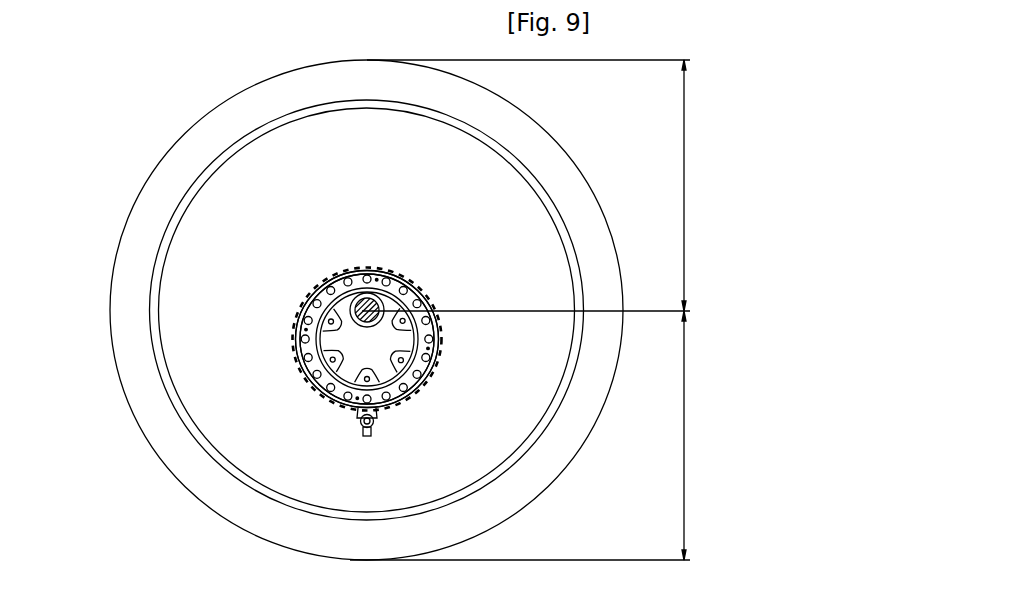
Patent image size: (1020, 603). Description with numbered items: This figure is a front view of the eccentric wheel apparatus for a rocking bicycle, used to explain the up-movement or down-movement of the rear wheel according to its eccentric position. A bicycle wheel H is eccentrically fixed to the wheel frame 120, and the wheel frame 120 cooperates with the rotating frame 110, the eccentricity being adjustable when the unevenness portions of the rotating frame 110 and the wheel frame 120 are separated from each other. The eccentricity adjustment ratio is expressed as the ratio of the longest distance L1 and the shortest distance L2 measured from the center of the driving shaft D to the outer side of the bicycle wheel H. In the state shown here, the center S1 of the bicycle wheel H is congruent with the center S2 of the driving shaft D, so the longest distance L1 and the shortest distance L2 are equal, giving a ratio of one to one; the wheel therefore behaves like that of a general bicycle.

The rotating frame 110 is at (418, 345).
The wheel frame 120 is at (407, 270).
The center of the bicycle wheel S1 is at (322, 291).
The center of the driving shaft S2 is at (367, 339).
The driving shaft D is at (350, 327).
The bicycle wheel H is at (318, 540).
The longest distance L1 is at (530, 435).
The shortest distance L2 is at (539, 185).